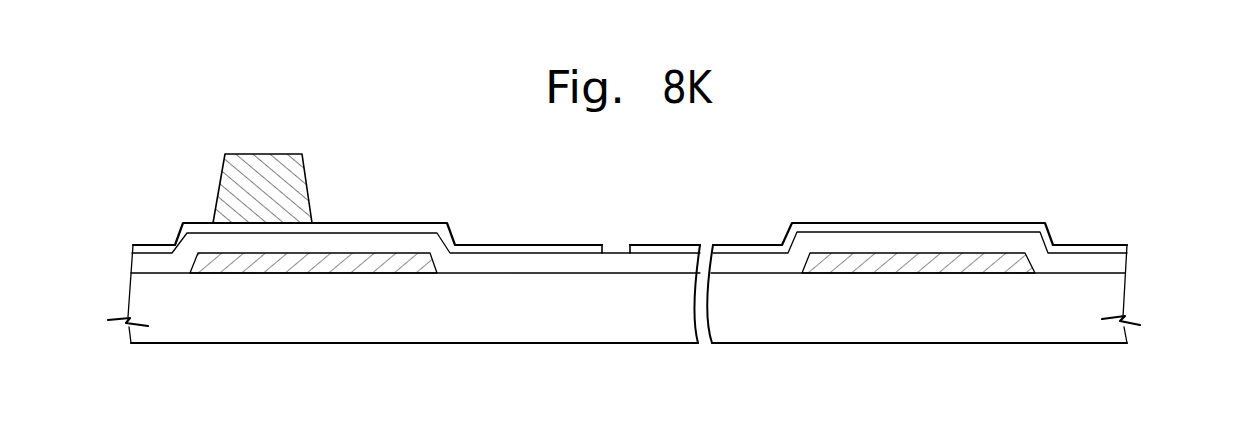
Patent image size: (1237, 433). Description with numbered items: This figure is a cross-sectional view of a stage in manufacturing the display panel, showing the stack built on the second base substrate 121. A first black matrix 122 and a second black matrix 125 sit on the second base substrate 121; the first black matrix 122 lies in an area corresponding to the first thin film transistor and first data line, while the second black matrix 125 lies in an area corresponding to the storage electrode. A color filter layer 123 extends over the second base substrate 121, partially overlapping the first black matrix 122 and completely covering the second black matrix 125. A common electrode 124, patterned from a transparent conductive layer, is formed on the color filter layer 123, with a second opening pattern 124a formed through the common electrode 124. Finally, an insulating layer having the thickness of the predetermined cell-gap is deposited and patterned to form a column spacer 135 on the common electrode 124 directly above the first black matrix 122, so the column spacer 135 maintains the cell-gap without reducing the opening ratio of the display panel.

The second base substrate 121 is at (135, 297).
The first black matrix 122 is at (313, 268).
The color filter layer 123 is at (143, 262).
The common electrode 124 is at (133, 247).
The second opening pattern 124a is at (617, 246).
The second black matrix 125 is at (920, 267).
The column spacer 135 is at (228, 187).